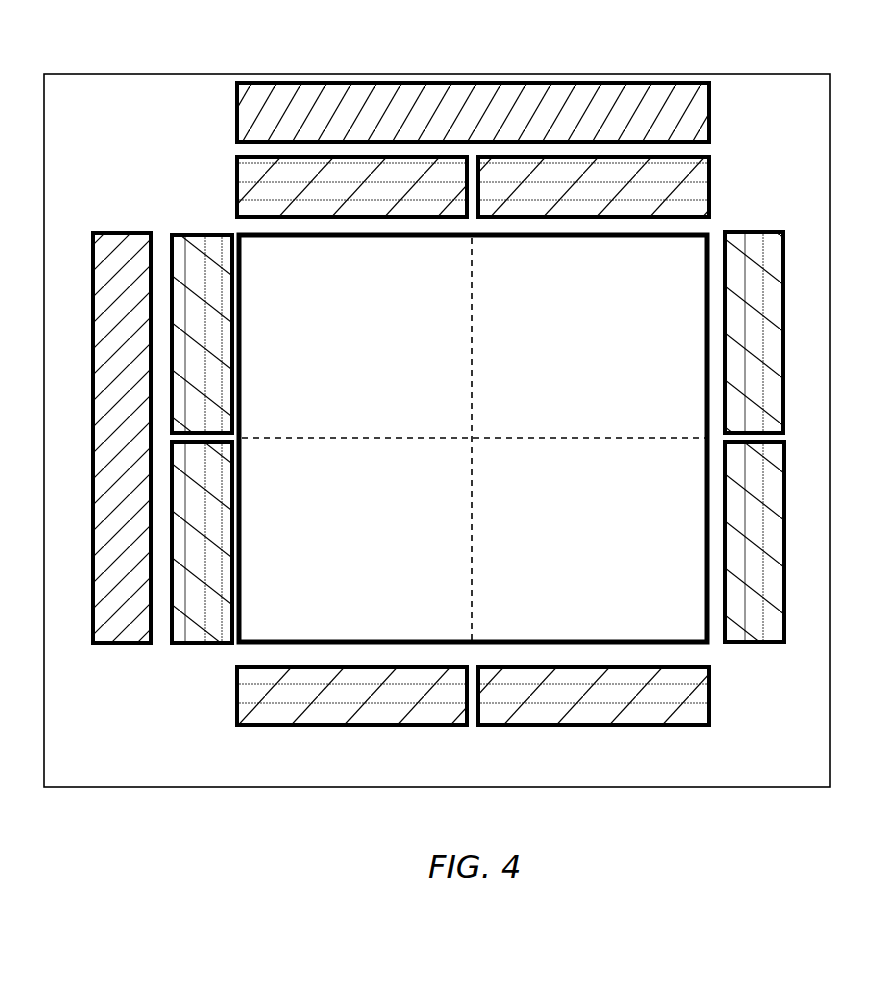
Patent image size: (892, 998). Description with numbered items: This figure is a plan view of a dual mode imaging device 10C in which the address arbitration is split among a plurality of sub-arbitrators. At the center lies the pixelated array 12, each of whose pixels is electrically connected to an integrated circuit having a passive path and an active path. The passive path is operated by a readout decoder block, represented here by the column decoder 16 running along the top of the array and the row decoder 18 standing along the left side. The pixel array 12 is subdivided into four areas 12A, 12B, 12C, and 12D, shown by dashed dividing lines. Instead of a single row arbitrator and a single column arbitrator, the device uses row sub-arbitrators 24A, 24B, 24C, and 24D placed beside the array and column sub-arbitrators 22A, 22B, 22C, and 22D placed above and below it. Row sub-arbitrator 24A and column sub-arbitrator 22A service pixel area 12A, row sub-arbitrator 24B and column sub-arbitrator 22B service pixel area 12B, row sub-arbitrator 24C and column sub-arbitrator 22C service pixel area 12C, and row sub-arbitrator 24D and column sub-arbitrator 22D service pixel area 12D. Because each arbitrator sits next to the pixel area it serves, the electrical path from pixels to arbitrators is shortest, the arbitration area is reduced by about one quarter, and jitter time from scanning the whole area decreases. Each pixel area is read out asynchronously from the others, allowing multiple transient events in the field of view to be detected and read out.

The device 10C is at (608, 885).
The pixelated array 12 is at (452, 414).
The pixel area 12A is at (356, 343).
The pixel area 12B is at (571, 343).
The pixel area 12C is at (356, 528).
The pixel area 12D is at (572, 528).
The column decoder 16 is at (545, 84).
The row decoder 18 is at (127, 233).
The column sub-arbitrator 22A is at (237, 177).
The column sub-arbitrator 22B is at (710, 168).
The column sub-arbitrator 22C is at (340, 728).
The column sub-arbitrator 22D is at (658, 727).
The row sub-arbitrator 24A is at (190, 233).
The row sub-arbitrator 24B is at (784, 328).
The row sub-arbitrator 24C is at (178, 645).
The row sub-arbitrator 24D is at (750, 643).